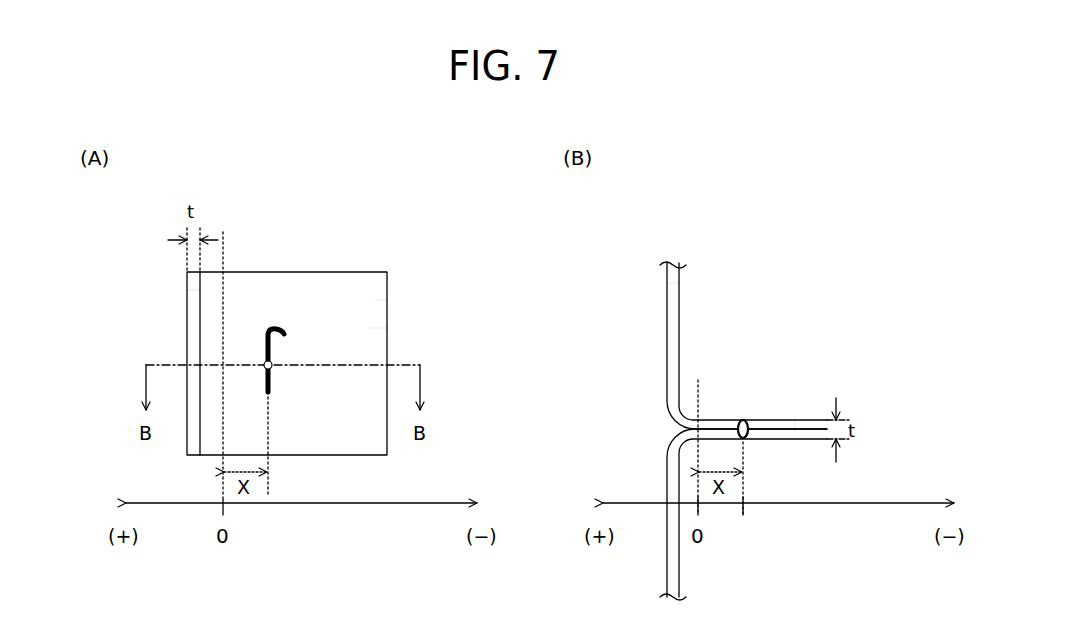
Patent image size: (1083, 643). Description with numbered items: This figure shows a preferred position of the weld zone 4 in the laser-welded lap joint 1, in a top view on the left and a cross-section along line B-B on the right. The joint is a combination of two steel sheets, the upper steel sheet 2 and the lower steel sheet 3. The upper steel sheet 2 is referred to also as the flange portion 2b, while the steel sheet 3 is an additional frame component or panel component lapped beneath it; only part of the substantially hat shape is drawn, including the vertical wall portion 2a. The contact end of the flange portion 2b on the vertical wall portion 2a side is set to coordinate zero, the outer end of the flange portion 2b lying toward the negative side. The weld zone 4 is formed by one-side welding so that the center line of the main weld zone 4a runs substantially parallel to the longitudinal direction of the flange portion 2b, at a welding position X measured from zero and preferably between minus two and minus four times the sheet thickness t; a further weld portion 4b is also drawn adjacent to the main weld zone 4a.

The laser-welded lap joint 1 is at (352, 196).
The steel sheet 2 is at (360, 283).
The vertical wall portion 2a is at (187, 292).
The flange portion 2b is at (370, 328).
The steel sheet 3 is at (375, 300).
The weld zone 4 is at (362, 393).
The main weld zone 4a is at (272, 385).
The weld end portion 4b is at (284, 334).